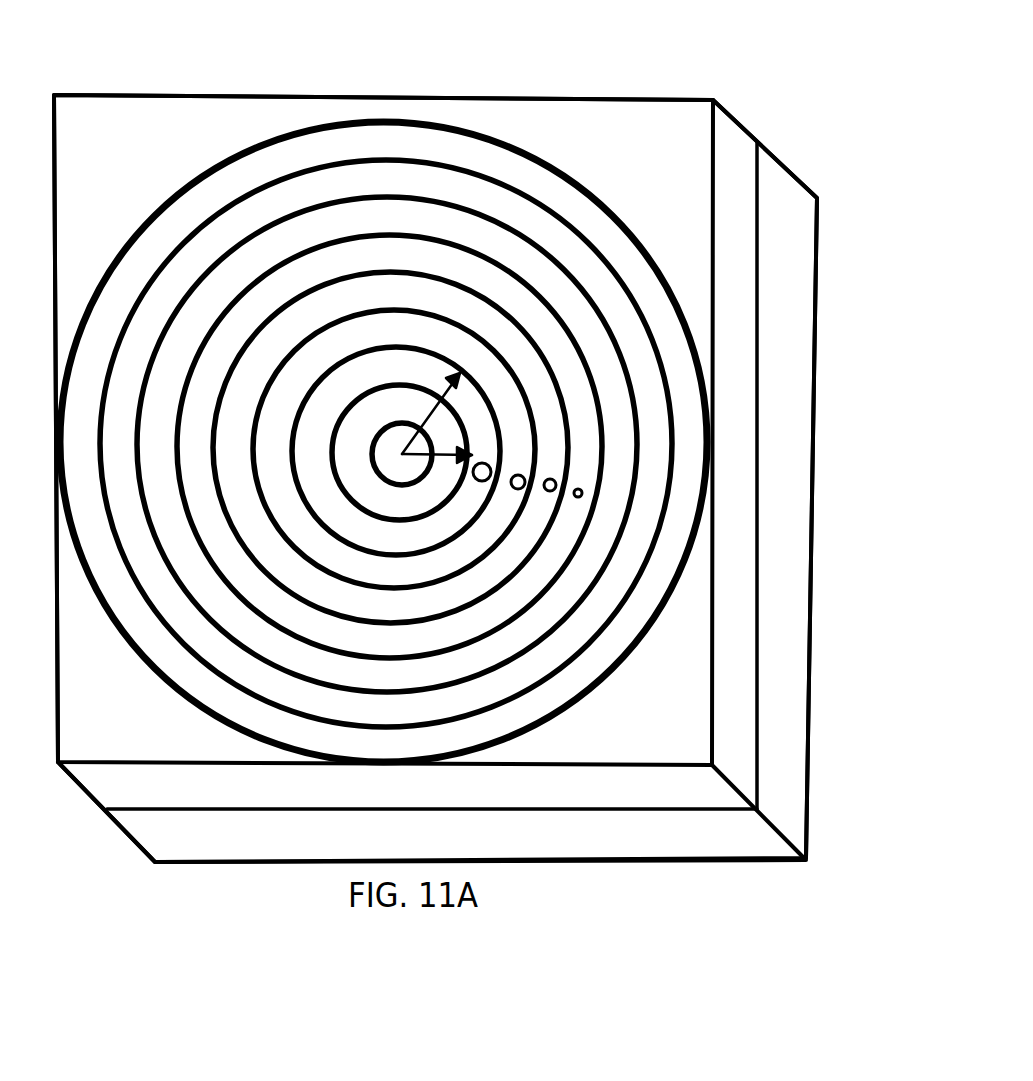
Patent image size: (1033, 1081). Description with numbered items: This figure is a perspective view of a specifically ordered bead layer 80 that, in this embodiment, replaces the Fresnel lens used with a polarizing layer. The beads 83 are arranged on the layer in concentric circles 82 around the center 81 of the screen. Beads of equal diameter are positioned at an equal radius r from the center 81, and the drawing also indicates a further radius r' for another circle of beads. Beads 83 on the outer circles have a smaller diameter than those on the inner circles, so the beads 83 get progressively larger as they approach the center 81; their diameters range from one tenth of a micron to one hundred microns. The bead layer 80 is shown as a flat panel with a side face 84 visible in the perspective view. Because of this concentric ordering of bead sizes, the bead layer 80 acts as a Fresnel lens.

The bead layer 80 is at (158, 882).
The center 81 is at (198, 837).
The concentric circles 82 is at (115, 743).
The beads 83 is at (487, 490).
The side face 84 is at (660, 270).
The radius r is at (549, 247).
The radius r prime r' is at (517, 229).